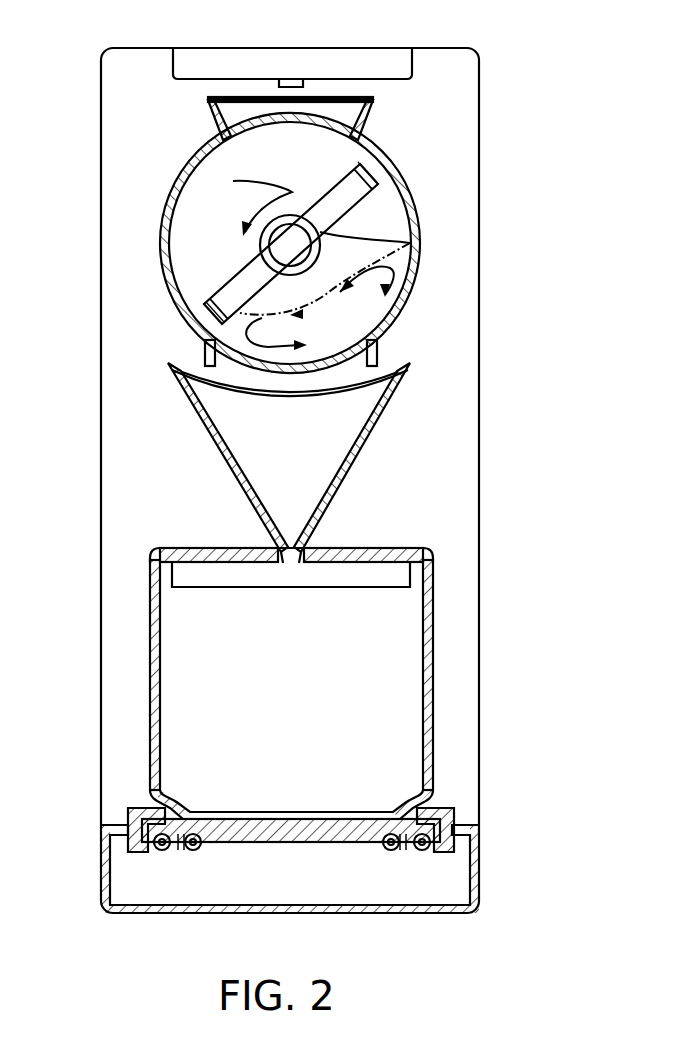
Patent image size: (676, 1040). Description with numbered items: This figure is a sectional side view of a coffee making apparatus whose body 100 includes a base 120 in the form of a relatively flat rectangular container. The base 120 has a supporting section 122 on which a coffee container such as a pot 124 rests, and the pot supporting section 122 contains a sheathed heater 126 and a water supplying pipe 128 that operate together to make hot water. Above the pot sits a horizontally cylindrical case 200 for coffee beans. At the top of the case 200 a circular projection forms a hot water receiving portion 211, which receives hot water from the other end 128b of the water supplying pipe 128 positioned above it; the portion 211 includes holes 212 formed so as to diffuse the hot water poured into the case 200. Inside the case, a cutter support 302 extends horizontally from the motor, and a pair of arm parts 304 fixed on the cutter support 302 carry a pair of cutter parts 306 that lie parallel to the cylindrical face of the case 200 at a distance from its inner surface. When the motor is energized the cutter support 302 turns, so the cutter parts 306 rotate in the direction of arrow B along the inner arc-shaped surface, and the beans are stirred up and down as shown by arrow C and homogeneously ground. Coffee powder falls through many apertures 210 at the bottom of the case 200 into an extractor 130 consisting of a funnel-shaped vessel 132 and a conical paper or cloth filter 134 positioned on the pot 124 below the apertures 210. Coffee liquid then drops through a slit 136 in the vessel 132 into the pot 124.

The body 100 is at (497, 408).
The base 120 is at (100, 888).
The supporting section 122 is at (317, 836).
The pot 124 is at (150, 655).
The sheathed heater 126 is at (195, 852).
The water supplying pipe 128 is at (163, 853).
The other end of water supplying pipe 128b is at (297, 86).
The extractor 130 is at (279, 500).
The funnel-shaped vessel 132 is at (210, 440).
The filter 134 is at (360, 457).
The slit 136 is at (289, 562).
The case 200 is at (176, 181).
The apertures 210 is at (292, 368).
The hot water receiving portion 211 is at (222, 105).
The holes 212 is at (285, 120).
The cutter support 302 is at (322, 227).
The arm parts 304 is at (238, 268).
The cutter parts 306 is at (375, 165).
The arrow B is at (254, 202).
The arrow C is at (323, 310).